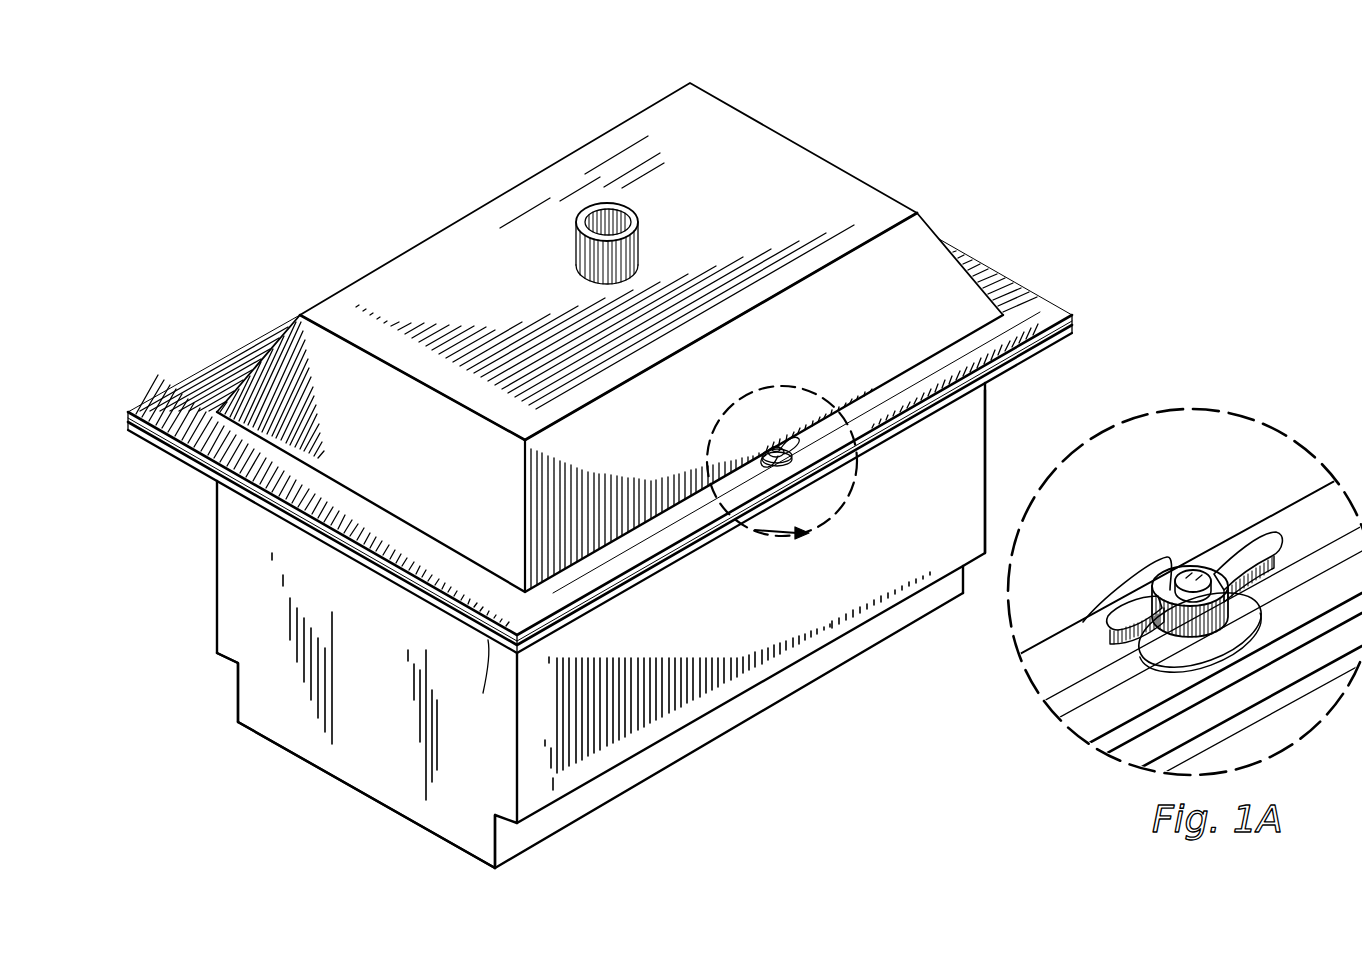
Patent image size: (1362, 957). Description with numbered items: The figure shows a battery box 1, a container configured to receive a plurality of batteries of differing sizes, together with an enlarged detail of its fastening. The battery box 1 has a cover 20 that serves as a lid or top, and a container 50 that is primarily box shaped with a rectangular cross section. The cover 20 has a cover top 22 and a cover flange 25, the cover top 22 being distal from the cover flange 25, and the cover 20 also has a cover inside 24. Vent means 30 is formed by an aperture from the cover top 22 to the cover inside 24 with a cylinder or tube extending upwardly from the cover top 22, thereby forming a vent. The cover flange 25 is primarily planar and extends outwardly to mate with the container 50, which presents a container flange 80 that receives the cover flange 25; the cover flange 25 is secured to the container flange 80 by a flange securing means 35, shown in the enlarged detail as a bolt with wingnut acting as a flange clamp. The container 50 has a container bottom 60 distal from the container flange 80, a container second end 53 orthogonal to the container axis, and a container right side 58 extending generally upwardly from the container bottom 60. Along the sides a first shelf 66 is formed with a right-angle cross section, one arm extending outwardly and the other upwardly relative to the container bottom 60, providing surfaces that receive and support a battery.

In FIG. 1, the battery box 1 is at (922, 159).
In FIG. 1, the cover 20 is at (792, 193).
In FIG. 1, the cover top 22 is at (405, 285).
In FIG. 1, the cover inside 24 is at (440, 463).
In FIG. 1, the cover flange 25 is at (198, 436).
In FIG. 1, the vent means 30 is at (607, 225).
In FIG. 1, the flange securing means 35 is at (777, 470).
In FIG. 1A, the flange securing means 35 is at (1112, 636).
In FIG. 1, the container 50 is at (965, 458).
In FIG. 1, the container second end 53 is at (380, 762).
In FIG. 1, the container right side 58 is at (951, 502).
In FIG. 1, the container bottom 60 is at (485, 845).
In FIG. 1, the first shelf 66 is at (213, 670).
In FIG. 1, the container flange 80 is at (488, 640).